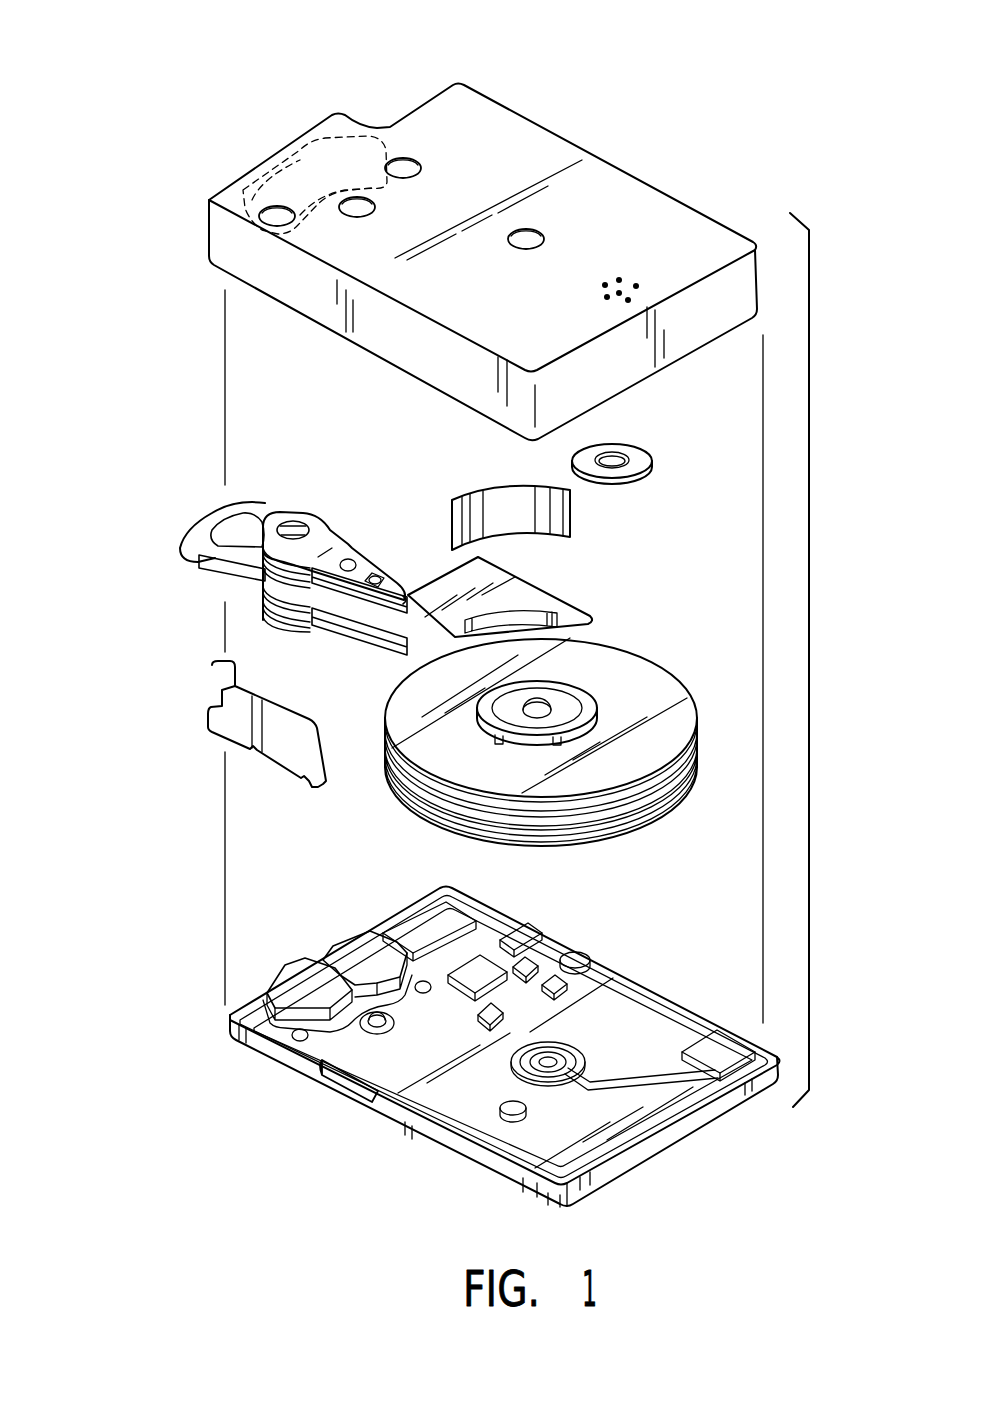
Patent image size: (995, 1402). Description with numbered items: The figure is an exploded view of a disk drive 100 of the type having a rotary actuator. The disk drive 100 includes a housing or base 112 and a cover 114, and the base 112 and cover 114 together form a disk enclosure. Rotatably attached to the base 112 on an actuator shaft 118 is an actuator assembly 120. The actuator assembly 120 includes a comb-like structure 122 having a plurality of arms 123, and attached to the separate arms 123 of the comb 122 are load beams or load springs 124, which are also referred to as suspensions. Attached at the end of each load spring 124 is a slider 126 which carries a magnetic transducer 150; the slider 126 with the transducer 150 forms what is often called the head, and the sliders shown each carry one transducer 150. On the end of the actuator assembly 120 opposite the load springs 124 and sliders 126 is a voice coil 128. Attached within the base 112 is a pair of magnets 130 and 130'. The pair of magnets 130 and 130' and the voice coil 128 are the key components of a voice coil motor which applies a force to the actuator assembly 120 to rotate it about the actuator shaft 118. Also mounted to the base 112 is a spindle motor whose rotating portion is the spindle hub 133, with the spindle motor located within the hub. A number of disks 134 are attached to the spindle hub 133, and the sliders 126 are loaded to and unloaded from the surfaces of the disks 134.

The disk drive 100 is at (624, 95).
The base 112 is at (505, 1047).
The cover 114 is at (642, 199).
The actuator shaft 118 is at (293, 524).
The actuator assembly 120 is at (247, 576).
The comb-like structure 122 is at (317, 628).
The arms 123 is at (345, 560).
The load springs 124 is at (375, 576).
The slider 126 is at (407, 598).
The voice coil 128 is at (202, 528).
The magnet 130 is at (307, 164).
The magnet 130' is at (337, 966).
The spindle hub 133 is at (548, 705).
The disks 134 is at (663, 690).
The magnetic transducer 150 is at (410, 602).